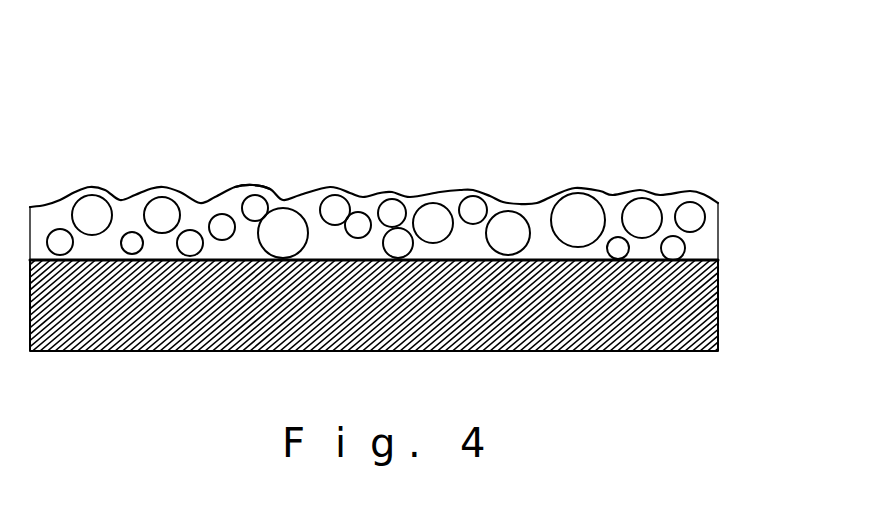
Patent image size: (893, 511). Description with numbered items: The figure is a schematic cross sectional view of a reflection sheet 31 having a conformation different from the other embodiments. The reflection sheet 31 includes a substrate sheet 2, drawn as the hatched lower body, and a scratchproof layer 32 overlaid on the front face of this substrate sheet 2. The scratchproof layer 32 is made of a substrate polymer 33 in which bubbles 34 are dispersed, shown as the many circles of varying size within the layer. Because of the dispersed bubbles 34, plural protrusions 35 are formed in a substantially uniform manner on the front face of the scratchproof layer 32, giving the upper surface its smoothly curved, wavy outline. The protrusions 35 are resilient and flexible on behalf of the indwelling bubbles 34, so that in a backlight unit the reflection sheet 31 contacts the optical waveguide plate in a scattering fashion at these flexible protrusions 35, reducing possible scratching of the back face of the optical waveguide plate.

The substrate sheet 2 is at (722, 305).
The reflection sheet 31 is at (427, 148).
The scratchproof layer 32 is at (720, 230).
The substrate polymer 33 is at (538, 215).
The bubbles 34 is at (508, 211).
The protrusions 35 is at (260, 177).